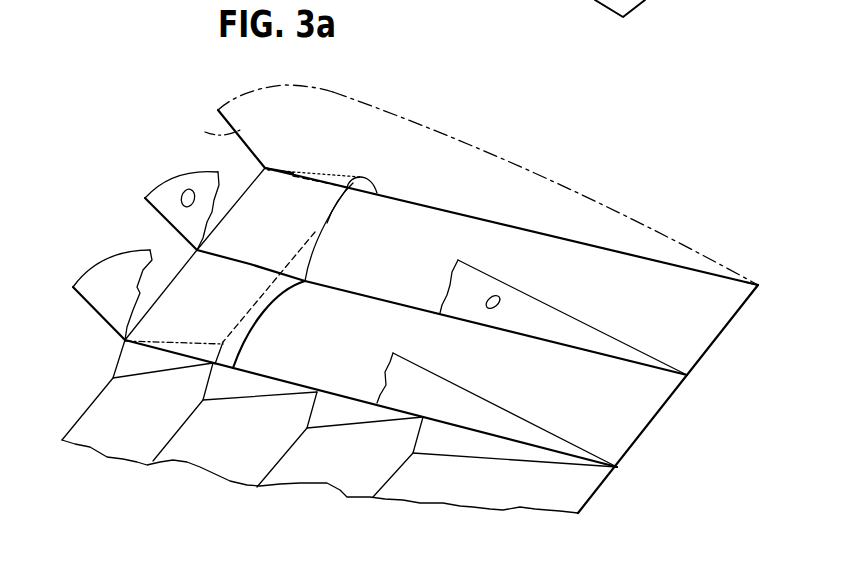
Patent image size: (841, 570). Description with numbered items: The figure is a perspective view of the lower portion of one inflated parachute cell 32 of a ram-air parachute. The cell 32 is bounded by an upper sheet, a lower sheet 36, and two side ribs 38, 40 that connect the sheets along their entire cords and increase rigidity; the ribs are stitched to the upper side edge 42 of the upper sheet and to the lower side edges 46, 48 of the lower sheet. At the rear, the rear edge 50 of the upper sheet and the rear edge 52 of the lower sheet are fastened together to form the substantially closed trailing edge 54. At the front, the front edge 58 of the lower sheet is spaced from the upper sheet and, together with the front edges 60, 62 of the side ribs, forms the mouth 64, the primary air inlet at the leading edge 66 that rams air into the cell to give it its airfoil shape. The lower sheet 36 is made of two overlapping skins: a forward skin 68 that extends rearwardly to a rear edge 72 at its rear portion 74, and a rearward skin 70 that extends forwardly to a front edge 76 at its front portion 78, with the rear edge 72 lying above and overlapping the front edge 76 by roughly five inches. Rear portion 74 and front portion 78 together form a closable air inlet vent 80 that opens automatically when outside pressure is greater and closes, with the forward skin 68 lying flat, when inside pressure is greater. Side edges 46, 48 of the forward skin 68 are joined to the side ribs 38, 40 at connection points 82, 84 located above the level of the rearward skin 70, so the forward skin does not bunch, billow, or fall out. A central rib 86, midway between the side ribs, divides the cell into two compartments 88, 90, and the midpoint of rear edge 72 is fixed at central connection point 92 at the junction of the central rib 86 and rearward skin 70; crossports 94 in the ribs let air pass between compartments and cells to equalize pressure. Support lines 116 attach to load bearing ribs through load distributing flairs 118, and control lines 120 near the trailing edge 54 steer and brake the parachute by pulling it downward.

The parachute cell 32 is at (258, 78).
The lower sheet 36 is at (608, 423).
The side rib 38 is at (442, 404).
The side rib 40 is at (553, 215).
The upper side edge 42 is at (562, 0).
The lower side edge 46 is at (503, 438).
The lower side edge 48 is at (728, 282).
The rear edge of upper sheet 50 is at (663, 2).
The rear edge of lower sheet 52 is at (664, 404).
The trailing edge 54 is at (706, 369).
The front edge of lower sheet 58 is at (183, 252).
The front edge of side rib 60 is at (122, 340).
The front edge of side rib 62 is at (205, 132).
The mouth 64 is at (252, 186).
The leading edge 66 is at (138, 204).
The forward skin 68 is at (288, 200).
The rearward skin 70 is at (440, 254).
The rear edge of forward skin 72 is at (277, 287).
The rear portion of forward skin 74 is at (315, 238).
The front edge of rearward skin 76 is at (262, 317).
The front portion of rearward skin 78 is at (372, 235).
The air inlet vent 80 is at (377, 196).
The connection point 82 is at (237, 346).
The connection point 84 is at (377, 190).
The central rib 86 is at (545, 327).
The compartment 88 is at (600, 387).
The compartment 90 is at (658, 322).
The central connection point 92 is at (309, 279).
The crossport 94 is at (499, 297).
The support lines 116 is at (92, 398).
The flairs 118 is at (215, 383).
The control lines 120 is at (586, 503).